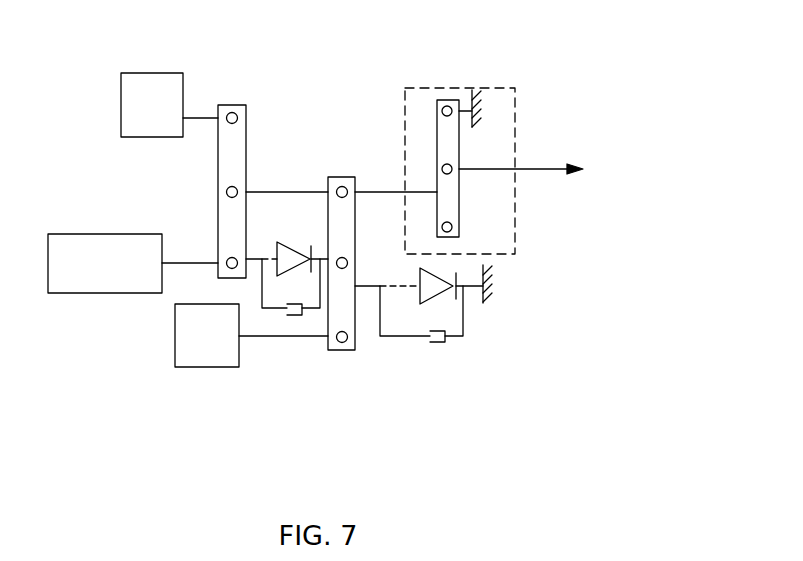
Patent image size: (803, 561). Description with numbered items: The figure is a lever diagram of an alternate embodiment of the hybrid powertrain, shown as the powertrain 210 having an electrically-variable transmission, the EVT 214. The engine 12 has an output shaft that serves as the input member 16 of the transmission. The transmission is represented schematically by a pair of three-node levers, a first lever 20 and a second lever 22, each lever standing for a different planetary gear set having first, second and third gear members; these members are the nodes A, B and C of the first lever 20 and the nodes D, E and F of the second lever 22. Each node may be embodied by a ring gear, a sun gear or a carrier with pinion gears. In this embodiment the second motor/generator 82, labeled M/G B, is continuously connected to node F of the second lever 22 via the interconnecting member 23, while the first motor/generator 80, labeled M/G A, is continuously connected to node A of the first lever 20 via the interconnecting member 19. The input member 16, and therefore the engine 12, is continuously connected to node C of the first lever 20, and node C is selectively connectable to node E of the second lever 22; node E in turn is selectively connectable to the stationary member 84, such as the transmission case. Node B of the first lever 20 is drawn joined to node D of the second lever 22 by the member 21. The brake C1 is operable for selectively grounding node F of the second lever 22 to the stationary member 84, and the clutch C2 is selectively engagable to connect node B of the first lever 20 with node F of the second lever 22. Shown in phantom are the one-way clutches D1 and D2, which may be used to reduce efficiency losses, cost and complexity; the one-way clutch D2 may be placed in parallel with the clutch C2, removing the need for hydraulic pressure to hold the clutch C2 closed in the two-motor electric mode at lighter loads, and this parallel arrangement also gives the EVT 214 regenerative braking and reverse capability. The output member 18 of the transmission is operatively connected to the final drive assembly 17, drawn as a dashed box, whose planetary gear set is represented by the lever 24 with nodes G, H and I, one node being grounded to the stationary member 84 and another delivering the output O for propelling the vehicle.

The powertrain 210 is at (609, 68).
The first motor/generator 80 is at (150, 73).
The second motor/generator 82 is at (208, 367).
The engine 12 is at (105, 293).
The input member 16 is at (185, 264).
The interconnecting member 19 is at (197, 117).
The lever 20 is at (232, 105).
The intermediate shaft 21 is at (262, 191).
The lever 22 is at (343, 352).
The interconnecting member 23 is at (300, 338).
The lever 24 is at (449, 100).
The output member 18 is at (392, 193).
The final drive assembly 17 is at (493, 88).
The stationary member 84 is at (476, 123).
The electrically-variable transmission 214 is at (395, 452).
The node A is at (247, 123).
The node B is at (222, 193).
The node C is at (226, 263).
The node D is at (356, 183).
The node E is at (349, 263).
The node F is at (356, 348).
The node G is at (445, 105).
The node H is at (452, 174).
The node I is at (452, 226).
The output O is at (582, 165).
The one-way clutch D1 is at (430, 302).
The one-way clutch D2 is at (288, 246).
The brake C1 is at (441, 349).
The clutch C2 is at (279, 320).